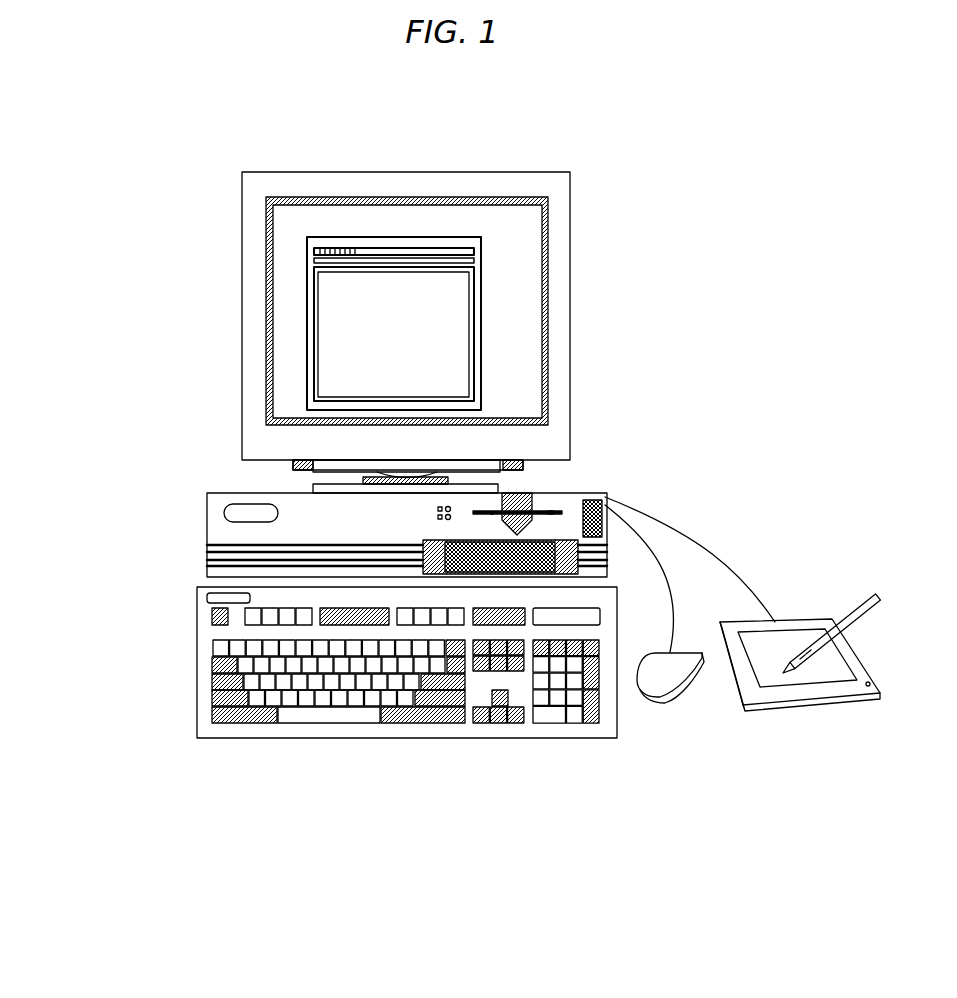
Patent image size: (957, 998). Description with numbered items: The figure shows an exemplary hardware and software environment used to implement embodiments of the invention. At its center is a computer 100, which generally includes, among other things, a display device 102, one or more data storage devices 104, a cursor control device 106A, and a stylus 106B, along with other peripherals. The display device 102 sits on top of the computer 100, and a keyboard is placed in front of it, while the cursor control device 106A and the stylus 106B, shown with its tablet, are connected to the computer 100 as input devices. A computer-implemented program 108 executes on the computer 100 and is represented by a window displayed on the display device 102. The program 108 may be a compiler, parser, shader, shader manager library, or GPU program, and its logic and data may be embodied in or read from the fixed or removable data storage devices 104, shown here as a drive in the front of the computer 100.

The computer 100 is at (430, 535).
The display device 102 is at (510, 307).
The data storage device 104 is at (650, 489).
The cursor control device 106A is at (670, 713).
The stylus 106B is at (818, 715).
The program 108 is at (507, 323).